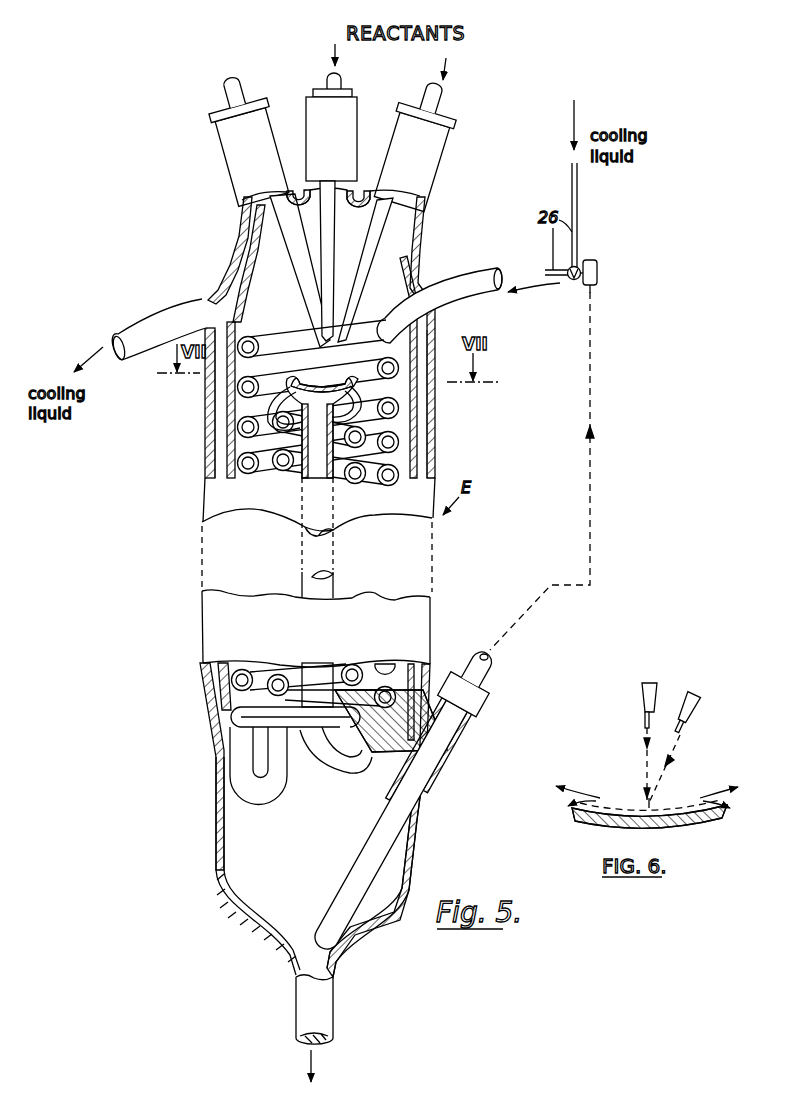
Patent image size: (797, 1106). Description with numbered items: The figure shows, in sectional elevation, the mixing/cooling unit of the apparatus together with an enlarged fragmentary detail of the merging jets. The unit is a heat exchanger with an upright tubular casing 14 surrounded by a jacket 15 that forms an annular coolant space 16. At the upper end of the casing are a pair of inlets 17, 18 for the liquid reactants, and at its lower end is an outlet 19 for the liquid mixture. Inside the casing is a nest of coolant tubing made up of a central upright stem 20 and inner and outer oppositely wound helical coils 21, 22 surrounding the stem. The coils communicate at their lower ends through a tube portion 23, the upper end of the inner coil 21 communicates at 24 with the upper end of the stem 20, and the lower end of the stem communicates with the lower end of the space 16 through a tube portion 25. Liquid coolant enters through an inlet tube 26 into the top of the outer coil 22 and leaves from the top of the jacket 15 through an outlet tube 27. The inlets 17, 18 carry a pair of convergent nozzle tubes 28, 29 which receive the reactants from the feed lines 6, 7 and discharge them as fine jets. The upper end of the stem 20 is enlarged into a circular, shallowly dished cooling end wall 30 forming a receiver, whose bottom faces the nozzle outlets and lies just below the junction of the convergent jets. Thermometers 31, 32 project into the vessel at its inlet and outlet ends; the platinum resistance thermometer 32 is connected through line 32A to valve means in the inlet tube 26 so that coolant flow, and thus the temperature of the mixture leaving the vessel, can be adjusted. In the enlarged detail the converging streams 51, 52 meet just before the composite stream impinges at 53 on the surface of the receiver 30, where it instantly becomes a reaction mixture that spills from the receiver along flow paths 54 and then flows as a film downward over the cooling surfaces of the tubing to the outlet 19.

In FIG. 5, the feed line 6 is at (328, 76).
In FIG. 5, the feed line 7 is at (446, 100).
In FIG. 5, the upright tubular casing 14 is at (414, 432).
In FIG. 5, the jacket 15 is at (436, 404).
In FIG. 5, the annular coolant space 16 is at (421, 457).
In FIG. 5, the inlet 17 is at (340, 164).
In FIG. 5, the inlet 18 is at (405, 181).
In FIG. 5, the outlet 19 is at (316, 997).
In FIG. 5, the central upright stem 20 is at (318, 471).
In FIG. 5, the inner helical coil 21 is at (305, 458).
In FIG. 5, the outer helical coil 22 is at (286, 383).
In FIG. 5, the tube portion 23 is at (265, 795).
In FIG. 5, the communication between coil and stem 24 is at (320, 410).
In FIG. 5, the tube portion 25 is at (373, 741).
In FIG. 5, the inlet tube 26 is at (489, 269).
In FIG. 5, the outlet tube 27 is at (137, 351).
In FIG. 5, the convergent nozzle tube 28 is at (333, 232).
In FIG. 6, the convergent nozzle tube 28 is at (643, 696).
In FIG. 5, the convergent nozzle tube 29 is at (380, 251).
In FIG. 6, the convergent nozzle tube 29 is at (693, 698).
In FIG. 5, the cooling end wall 30 is at (330, 363).
In FIG. 6, the cooling end wall 30 is at (678, 822).
In FIG. 5, the thermometer 31 is at (270, 220).
In FIG. 5, the platinum resistance thermometer 32 is at (385, 838).
In FIG. 5, the line 32A is at (594, 393).
In FIG. 6, the converging stream of fluid 51 is at (645, 728).
In FIG. 6, the converging stream of fluid 52 is at (677, 735).
In FIG. 6, the impingement point 53 is at (650, 800).
In FIG. 6, the flow paths 54 is at (585, 790).